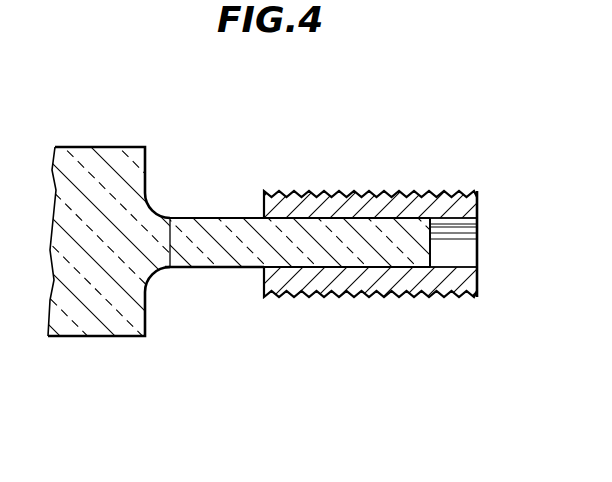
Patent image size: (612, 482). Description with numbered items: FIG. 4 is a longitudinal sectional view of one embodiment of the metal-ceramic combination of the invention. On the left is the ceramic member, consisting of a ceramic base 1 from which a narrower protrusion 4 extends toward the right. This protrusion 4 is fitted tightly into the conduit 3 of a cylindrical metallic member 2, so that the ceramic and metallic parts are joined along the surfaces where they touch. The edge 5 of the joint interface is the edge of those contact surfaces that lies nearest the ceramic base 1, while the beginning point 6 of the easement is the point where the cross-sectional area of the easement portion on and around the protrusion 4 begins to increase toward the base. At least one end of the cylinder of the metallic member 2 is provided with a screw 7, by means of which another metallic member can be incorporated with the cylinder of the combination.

The ceramic base 1 is at (113, 152).
The metallic member 2 is at (388, 290).
The conduit 3 is at (465, 252).
The protrusion 4 is at (345, 230).
The edge of joint interface 5 is at (262, 273).
The beginning point of the easement 6 is at (172, 218).
The screw 7 is at (438, 193).